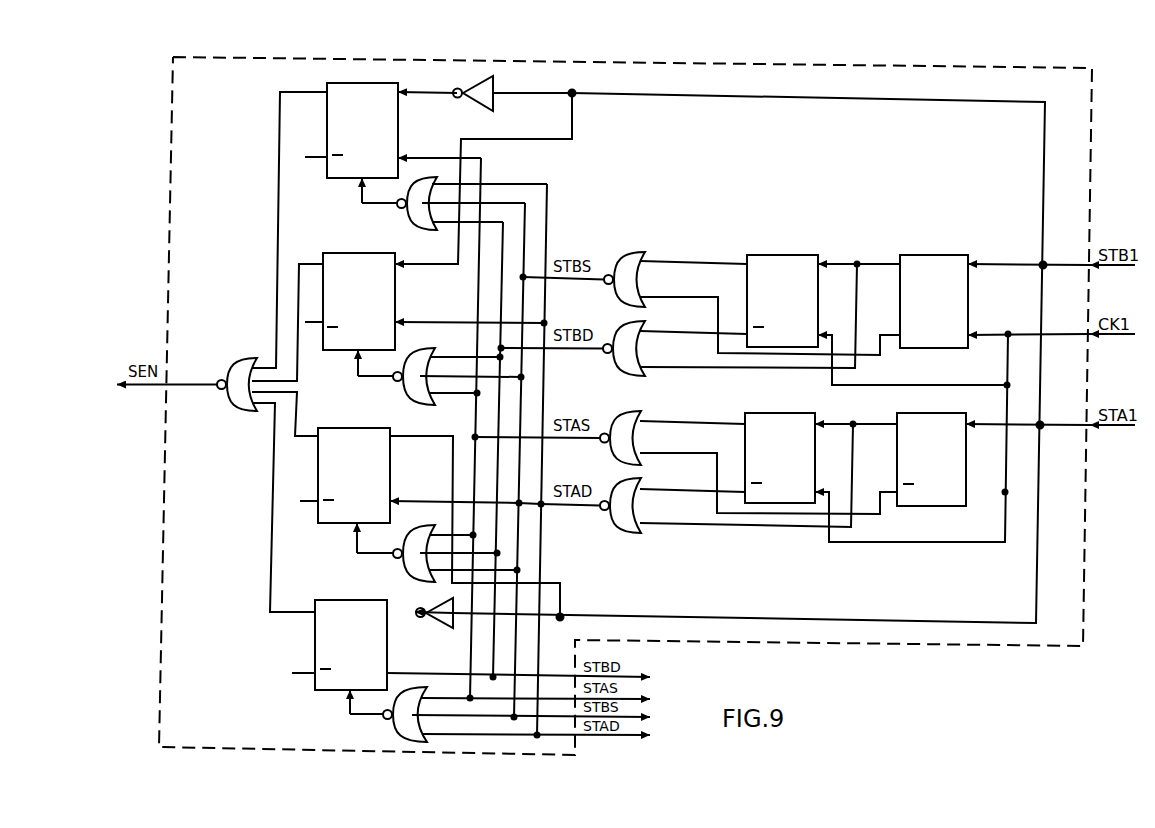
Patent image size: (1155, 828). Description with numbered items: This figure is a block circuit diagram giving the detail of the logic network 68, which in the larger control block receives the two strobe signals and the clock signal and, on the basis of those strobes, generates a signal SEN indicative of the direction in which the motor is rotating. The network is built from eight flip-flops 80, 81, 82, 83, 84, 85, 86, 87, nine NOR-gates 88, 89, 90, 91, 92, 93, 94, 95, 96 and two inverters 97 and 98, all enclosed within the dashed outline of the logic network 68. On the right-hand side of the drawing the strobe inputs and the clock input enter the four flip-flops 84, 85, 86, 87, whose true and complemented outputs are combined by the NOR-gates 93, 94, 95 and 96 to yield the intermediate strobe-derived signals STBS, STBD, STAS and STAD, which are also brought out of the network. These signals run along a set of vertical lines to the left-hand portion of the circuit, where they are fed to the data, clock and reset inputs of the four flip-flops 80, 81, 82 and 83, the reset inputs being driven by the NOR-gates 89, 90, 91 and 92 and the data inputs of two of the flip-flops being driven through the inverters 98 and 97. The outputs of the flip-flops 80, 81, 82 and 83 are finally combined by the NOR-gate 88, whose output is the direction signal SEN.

The logic network 68 is at (933, 630).
The flip-flop 80 is at (390, 131).
The flip-flop 81 is at (388, 303).
The flip-flop 82 is at (383, 477).
The flip-flop 83 is at (378, 650).
The flip-flop 84 is at (783, 253).
The flip-flop 85 is at (778, 413).
The flip-flop 86 is at (938, 242).
The flip-flop 87 is at (935, 413).
The NOR-gate 88 is at (238, 400).
The NOR-gate 89 is at (417, 215).
The NOR-gate 90 is at (417, 397).
The NOR-gate 91 is at (403, 568).
The NOR-gate 92 is at (395, 730).
The NOR-gate 93 is at (632, 253).
The NOR-gate 94 is at (628, 346).
The NOR-gate 95 is at (622, 436).
The NOR-gate 96 is at (623, 504).
The inverter 97 is at (443, 628).
The inverter 98 is at (490, 98).